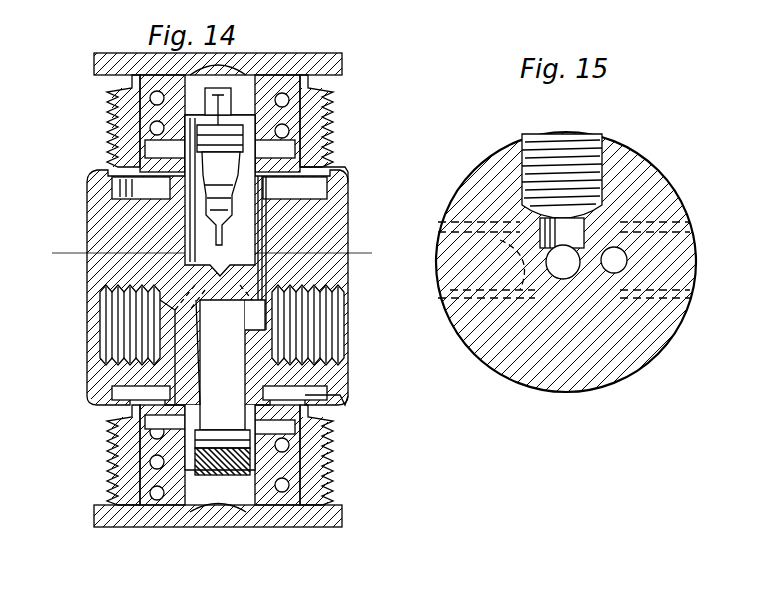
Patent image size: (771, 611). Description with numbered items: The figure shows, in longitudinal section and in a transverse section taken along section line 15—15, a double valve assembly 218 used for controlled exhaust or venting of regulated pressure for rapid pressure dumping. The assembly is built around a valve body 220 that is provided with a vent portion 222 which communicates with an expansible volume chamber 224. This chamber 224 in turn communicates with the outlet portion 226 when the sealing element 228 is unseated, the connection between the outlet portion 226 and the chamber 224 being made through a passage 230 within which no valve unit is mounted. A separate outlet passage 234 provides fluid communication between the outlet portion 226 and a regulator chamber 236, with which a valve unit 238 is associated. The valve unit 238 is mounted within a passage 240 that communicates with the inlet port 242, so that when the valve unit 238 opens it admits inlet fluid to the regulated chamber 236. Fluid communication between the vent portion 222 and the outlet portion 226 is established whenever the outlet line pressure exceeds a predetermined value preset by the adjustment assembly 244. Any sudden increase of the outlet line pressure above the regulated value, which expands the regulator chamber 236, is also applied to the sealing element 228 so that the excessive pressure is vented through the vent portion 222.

In FIG. 14, the section line 15— 15 is at (52, 272).
In FIG. 14, the double valve assembly 218 is at (80, 163).
In FIG. 14, the valve body 220 is at (103, 212).
In FIG. 14, the vent portion 222 is at (106, 341).
In FIG. 15, the vent portion 222 is at (442, 298).
In FIG. 14, the expansible volume chamber 224 is at (334, 397).
In FIG. 14, the outlet portion 226 is at (328, 338).
In FIG. 15, the outlet portion 226 is at (693, 306).
In FIG. 14, the sealing element 228 is at (222, 466).
In FIG. 14, the passage 230 is at (150, 366).
In FIG. 14, the outlet passage 234 is at (267, 234).
In FIG. 14, the regulator chamber 236 is at (312, 190).
In FIG. 14, the valve unit 238 is at (225, 177).
In FIG. 14, the passage 240 is at (193, 238).
In FIG. 15, the inlet port 242 is at (572, 146).
In FIG. 14, the adjustment assembly 244 is at (293, 531).